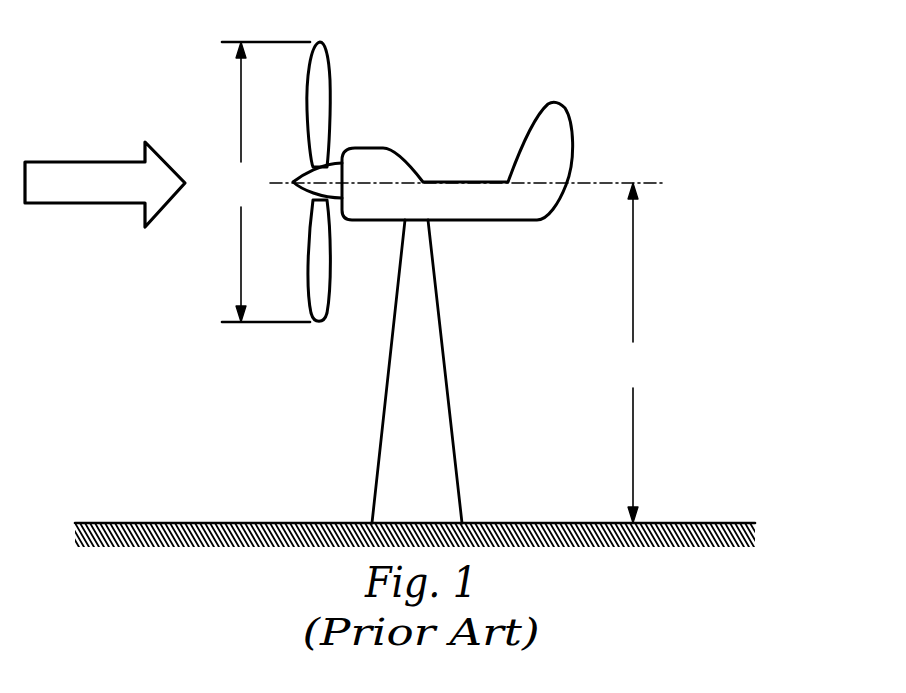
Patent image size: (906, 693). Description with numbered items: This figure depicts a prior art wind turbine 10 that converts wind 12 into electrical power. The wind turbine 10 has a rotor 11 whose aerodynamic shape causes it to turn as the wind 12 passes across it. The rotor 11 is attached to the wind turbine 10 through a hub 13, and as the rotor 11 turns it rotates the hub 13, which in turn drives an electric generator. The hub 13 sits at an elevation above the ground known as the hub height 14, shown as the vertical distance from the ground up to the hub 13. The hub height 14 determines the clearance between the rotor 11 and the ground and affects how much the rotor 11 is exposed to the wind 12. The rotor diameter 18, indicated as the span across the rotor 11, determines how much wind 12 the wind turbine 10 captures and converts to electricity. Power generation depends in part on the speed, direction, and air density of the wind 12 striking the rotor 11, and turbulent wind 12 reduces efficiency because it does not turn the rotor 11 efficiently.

The wind turbine 10 is at (598, 100).
The rotor 11 is at (331, 95).
The wind 12 is at (90, 162).
The hub 13 is at (305, 195).
The hub height 14 is at (615, 355).
The rotor diameter 18 is at (231, 178).